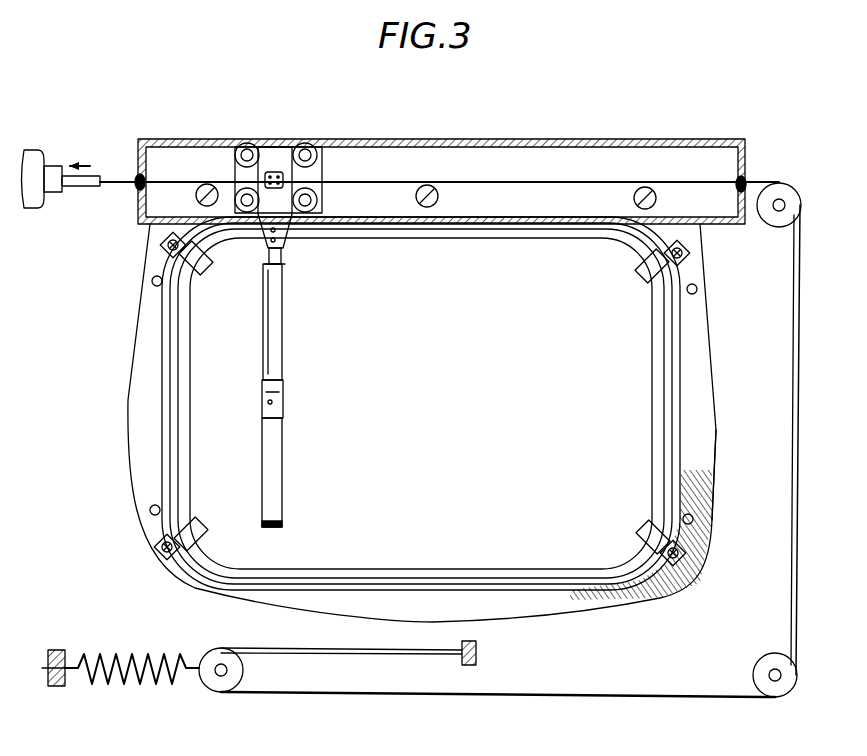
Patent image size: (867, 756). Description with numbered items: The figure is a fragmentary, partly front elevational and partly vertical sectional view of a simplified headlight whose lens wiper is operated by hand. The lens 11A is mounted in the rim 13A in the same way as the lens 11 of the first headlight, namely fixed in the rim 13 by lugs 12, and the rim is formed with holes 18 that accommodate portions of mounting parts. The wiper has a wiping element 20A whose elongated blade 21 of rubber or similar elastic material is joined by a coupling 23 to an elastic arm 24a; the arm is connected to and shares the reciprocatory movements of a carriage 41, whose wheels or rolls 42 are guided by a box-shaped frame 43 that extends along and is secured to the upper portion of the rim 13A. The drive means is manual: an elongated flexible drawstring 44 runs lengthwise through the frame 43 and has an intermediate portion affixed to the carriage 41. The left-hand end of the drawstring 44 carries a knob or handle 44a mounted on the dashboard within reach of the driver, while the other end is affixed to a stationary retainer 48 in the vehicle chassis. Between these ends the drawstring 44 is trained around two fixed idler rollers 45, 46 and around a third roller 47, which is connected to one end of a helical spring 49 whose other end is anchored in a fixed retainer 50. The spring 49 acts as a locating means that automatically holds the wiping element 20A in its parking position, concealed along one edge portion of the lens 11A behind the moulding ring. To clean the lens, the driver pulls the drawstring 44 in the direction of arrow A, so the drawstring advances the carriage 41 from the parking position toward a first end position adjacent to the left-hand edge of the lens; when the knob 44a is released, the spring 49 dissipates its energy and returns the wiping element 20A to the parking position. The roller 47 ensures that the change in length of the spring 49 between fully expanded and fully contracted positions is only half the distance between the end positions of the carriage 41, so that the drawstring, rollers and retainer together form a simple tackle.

The lens 11 is at (578, 545).
The lens 11A is at (458, 380).
The lugs 12 is at (690, 258).
The rim 13 is at (146, 275).
The rim 13A is at (714, 422).
The holes 18 is at (695, 521).
The wiping element 20A is at (292, 463).
The blade 21 is at (262, 446).
The coupling 23 is at (284, 392).
The elastic arm 24a is at (283, 332).
The carriage 41 is at (280, 148).
The wheels or rolls 42 is at (247, 143).
The box-shaped frame 43 is at (478, 140).
The drawstring 44 is at (522, 183).
The knob or handle 44a is at (31, 210).
The idler roller 45 is at (790, 190).
The idler roller 46 is at (760, 665).
The roller 47 is at (224, 692).
The stationary retainer 48 is at (478, 658).
The helical spring 49 is at (140, 686).
The fixed retainer 50 is at (52, 686).
The arrow A is at (91, 152).